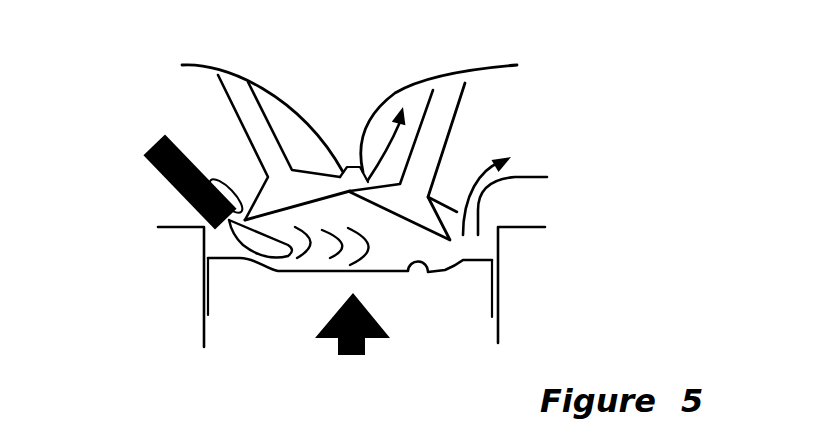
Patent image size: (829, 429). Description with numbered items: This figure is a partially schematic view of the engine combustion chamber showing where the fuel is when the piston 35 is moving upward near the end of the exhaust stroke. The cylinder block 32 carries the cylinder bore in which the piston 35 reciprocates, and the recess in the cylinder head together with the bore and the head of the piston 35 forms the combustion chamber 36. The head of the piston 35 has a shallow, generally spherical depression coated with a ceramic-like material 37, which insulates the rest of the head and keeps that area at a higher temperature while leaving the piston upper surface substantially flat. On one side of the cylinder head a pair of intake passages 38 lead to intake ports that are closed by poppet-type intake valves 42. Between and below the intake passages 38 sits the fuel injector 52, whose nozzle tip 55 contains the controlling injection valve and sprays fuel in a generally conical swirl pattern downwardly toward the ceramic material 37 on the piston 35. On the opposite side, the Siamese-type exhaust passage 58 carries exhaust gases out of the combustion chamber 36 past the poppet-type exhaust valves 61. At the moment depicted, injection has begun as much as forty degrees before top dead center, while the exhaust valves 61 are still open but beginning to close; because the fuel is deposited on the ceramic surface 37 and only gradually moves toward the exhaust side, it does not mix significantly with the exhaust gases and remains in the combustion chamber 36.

The cylinder block 32 is at (200, 303).
The piston 35 is at (477, 295).
The combustion chamber 36 is at (320, 212).
The ceramic-like material 37 is at (428, 270).
The intake passages 38 is at (203, 93).
The intake valves 42 is at (300, 187).
The fuel injector 52 is at (162, 182).
The nozzle tip 55 is at (228, 224).
The exhaust passage 58 is at (530, 164).
The exhaust valves 61 is at (402, 203).